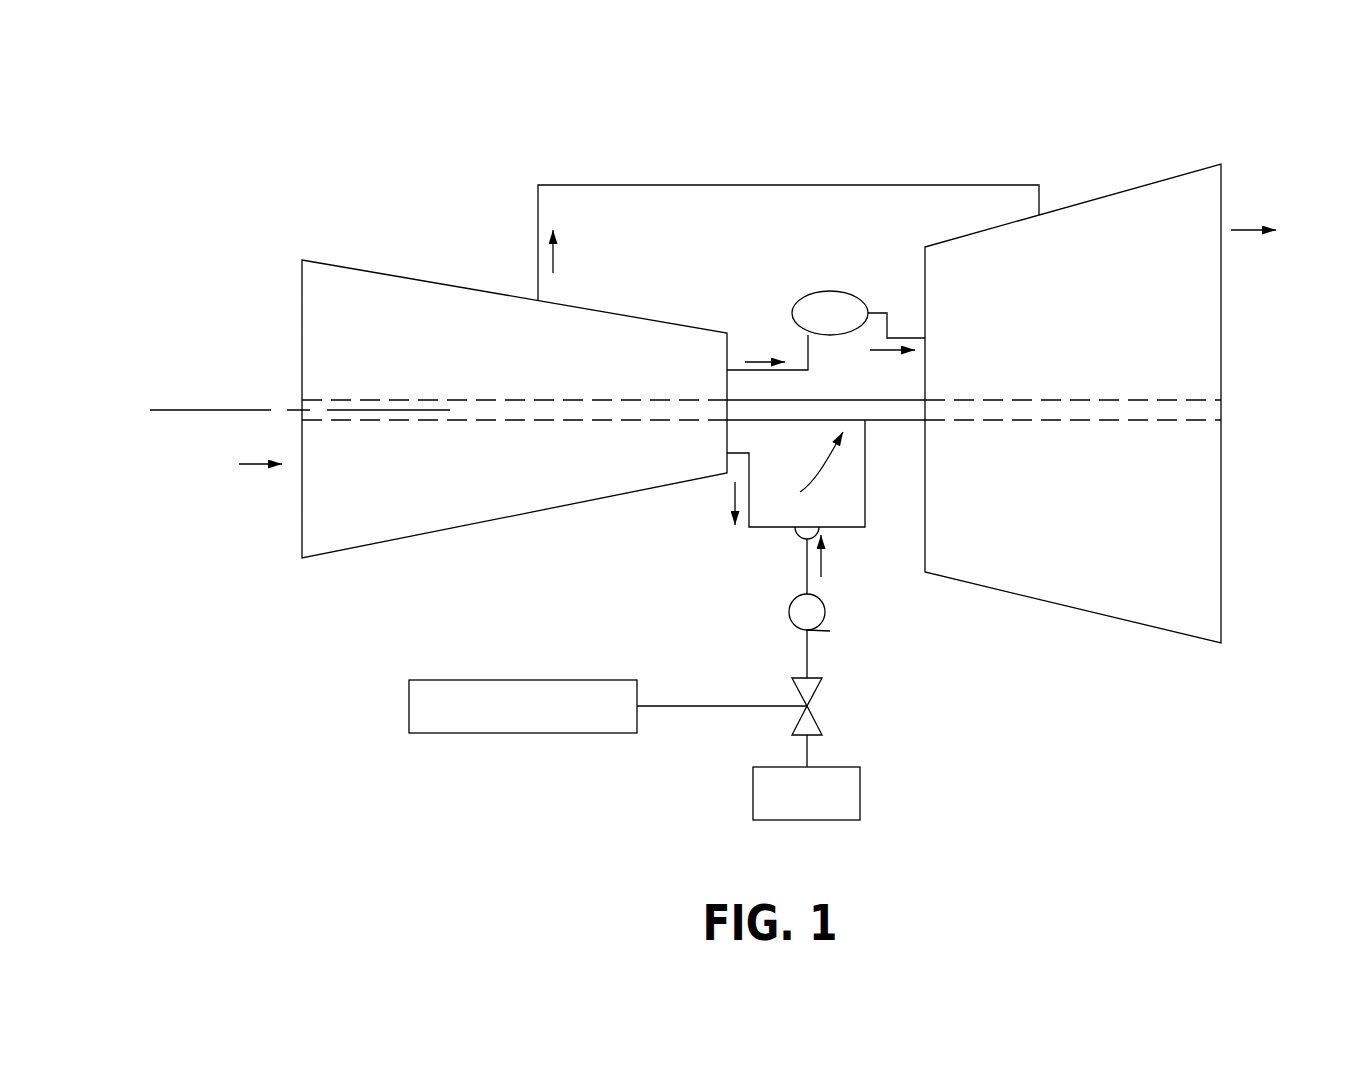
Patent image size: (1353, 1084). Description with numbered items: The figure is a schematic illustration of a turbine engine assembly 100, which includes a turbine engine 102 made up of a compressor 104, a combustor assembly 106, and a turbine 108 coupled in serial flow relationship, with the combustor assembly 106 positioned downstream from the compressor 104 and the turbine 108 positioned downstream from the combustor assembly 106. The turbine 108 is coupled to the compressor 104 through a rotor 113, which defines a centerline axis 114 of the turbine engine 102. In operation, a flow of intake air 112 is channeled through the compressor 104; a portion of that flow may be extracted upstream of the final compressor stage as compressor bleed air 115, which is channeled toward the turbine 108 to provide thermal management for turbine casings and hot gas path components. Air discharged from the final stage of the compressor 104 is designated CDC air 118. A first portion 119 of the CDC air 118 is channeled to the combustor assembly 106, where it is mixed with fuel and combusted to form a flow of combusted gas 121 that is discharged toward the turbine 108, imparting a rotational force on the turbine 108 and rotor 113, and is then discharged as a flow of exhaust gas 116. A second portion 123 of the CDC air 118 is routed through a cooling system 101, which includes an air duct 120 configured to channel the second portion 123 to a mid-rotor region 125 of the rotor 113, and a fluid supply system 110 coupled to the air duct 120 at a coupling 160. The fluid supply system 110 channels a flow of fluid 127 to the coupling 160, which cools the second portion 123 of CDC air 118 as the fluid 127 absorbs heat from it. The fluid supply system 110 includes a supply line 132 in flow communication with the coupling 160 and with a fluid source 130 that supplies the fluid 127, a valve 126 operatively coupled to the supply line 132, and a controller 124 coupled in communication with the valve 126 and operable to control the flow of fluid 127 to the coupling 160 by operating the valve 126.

The turbine engine assembly 100 is at (328, 125).
The cooling system 101 is at (347, 616).
The turbine engine 102 is at (582, 142).
The compressor 104 is at (343, 267).
The combustor assembly 106 is at (820, 291).
The turbine 108 is at (1152, 182).
The fluid supply system 110 is at (356, 764).
The flow of intake air 112 is at (252, 470).
The rotor 113 is at (1160, 398).
The centerline axis 114 is at (186, 410).
The compressor bleed air 115 is at (553, 266).
The flow of exhaust gas 116 is at (1245, 228).
The CDC air 118 is at (693, 410).
The first portion of CDC air 119 is at (757, 360).
The air duct 120 is at (760, 527).
The flow of combusted gas 121 is at (885, 352).
The second portion of CDC air 123 is at (723, 497).
The controller 124 is at (505, 735).
The mid-rotor region 125 is at (800, 475).
The valve 126 is at (822, 716).
The flow of fluid 127 is at (822, 567).
The fluid source 130 is at (862, 793).
The supply line 132 is at (808, 650).
The coupling 160 is at (797, 538).